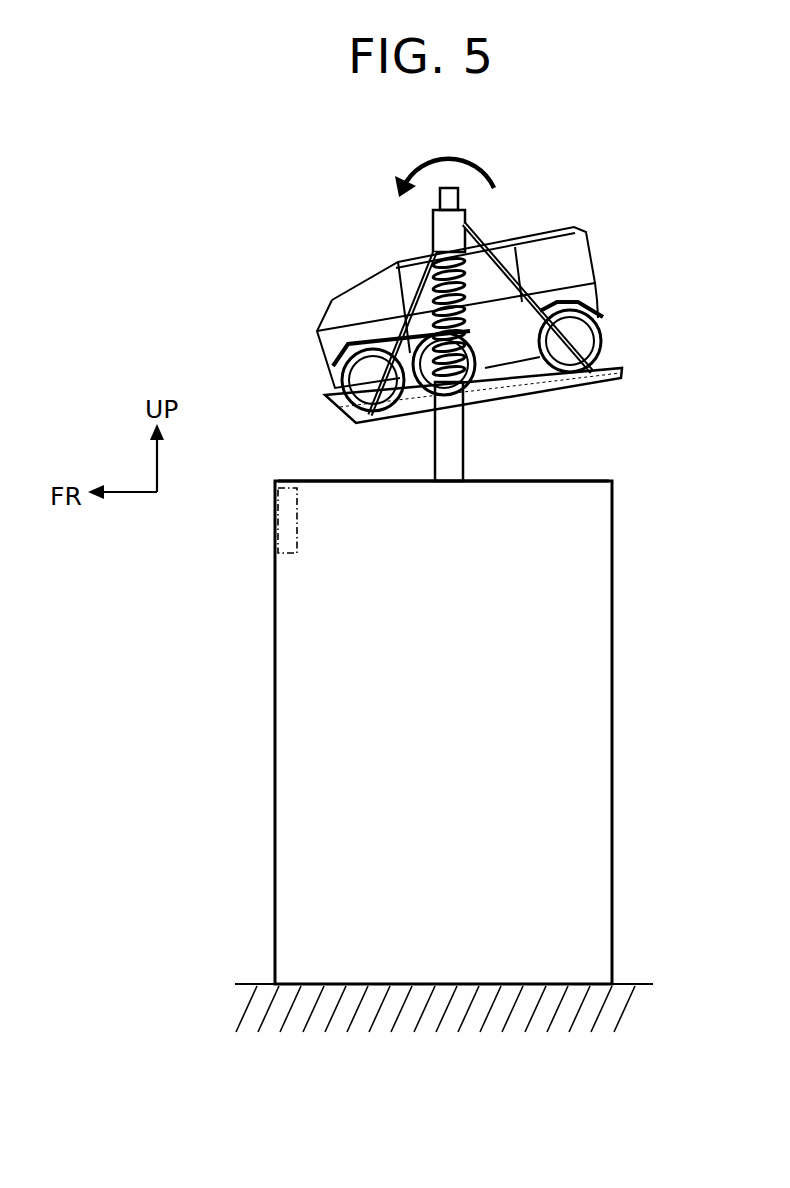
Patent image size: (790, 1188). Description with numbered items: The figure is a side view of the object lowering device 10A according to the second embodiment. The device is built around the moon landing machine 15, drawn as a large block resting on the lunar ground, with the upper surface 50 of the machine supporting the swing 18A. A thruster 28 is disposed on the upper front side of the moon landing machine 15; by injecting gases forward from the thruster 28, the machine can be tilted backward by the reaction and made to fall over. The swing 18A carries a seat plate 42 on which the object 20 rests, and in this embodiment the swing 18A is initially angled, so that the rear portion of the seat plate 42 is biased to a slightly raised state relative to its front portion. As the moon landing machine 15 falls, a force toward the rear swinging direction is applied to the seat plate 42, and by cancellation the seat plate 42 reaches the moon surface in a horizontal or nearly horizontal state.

The object lowering device 10A is at (266, 256).
The moon landing machine 15 is at (613, 700).
The swing 18A is at (627, 308).
The vehicle 20 is at (560, 228).
The thruster 28 is at (282, 555).
The seat plate 42 is at (617, 370).
The upper surface of base 50 is at (310, 480).